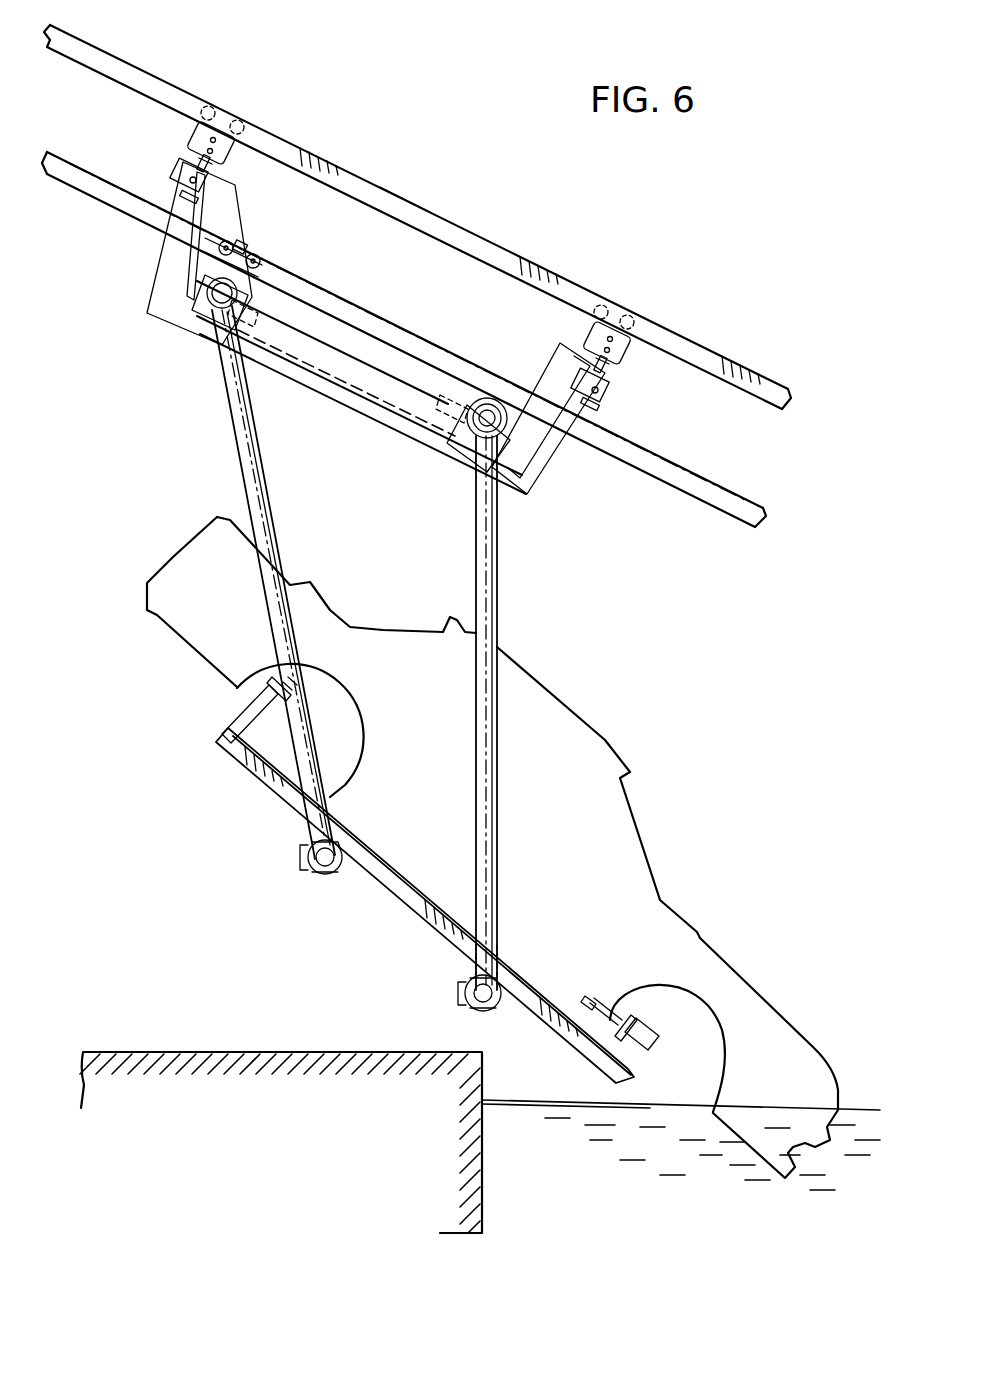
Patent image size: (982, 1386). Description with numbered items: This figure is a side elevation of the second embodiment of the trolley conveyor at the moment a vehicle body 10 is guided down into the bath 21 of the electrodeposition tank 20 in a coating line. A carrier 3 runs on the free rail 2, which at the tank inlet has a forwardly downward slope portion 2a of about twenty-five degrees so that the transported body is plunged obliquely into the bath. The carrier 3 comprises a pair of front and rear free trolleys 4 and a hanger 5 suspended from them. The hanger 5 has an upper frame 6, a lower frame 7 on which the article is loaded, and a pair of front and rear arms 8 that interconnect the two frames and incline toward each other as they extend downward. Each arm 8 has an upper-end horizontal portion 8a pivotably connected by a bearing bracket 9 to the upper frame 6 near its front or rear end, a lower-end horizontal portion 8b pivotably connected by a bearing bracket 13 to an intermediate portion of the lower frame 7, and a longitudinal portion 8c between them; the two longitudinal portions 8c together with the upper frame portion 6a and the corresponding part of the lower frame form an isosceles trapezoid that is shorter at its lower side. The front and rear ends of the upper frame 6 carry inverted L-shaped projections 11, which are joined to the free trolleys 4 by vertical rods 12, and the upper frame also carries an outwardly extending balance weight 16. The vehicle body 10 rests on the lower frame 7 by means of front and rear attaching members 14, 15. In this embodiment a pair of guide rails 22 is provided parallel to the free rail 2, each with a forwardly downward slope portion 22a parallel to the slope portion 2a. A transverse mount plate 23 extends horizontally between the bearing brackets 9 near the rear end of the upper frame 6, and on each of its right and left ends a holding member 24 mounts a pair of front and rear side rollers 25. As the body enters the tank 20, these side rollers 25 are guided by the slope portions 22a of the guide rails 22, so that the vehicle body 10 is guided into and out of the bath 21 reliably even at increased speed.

The free rail 2 is at (708, 356).
The forwardly downward slope portion 2a is at (490, 246).
The carrier 3 is at (655, 598).
The free trolley 4 is at (195, 128).
The hanger 5 is at (553, 580).
The upper frame 6 is at (338, 398).
The upper frame portion 6a is at (373, 418).
The lower frame 7 is at (420, 903).
The arm 8 is at (263, 508).
The upper-end horizontal portion 8a is at (210, 318).
The lower-end horizontal portion 8b is at (330, 875).
The longitudinal portion 8c is at (273, 608).
The bearing bracket 9 is at (203, 288).
The vehicle body 10 is at (605, 746).
The inverted L-shaped projection 11 is at (185, 170).
The vertical rod 12 is at (225, 167).
The bearing bracket 13 is at (308, 862).
The attaching member 14 is at (625, 1057).
The attaching member 15 is at (248, 716).
The balance weight 16 is at (302, 342).
The electrodeposition tank 20 is at (318, 1050).
The bath 21 is at (845, 1120).
The guide rail 22 is at (690, 457).
The forwardly downward slope portion 22a is at (392, 330).
The transverse mount plate 23 is at (232, 255).
The holding member 24 is at (248, 250).
The side roller 25 is at (226, 240).